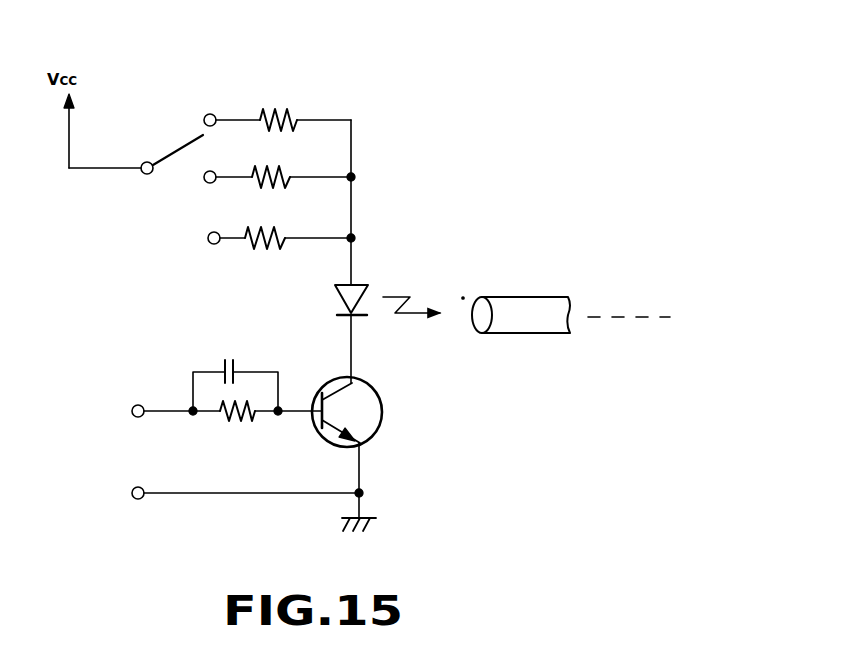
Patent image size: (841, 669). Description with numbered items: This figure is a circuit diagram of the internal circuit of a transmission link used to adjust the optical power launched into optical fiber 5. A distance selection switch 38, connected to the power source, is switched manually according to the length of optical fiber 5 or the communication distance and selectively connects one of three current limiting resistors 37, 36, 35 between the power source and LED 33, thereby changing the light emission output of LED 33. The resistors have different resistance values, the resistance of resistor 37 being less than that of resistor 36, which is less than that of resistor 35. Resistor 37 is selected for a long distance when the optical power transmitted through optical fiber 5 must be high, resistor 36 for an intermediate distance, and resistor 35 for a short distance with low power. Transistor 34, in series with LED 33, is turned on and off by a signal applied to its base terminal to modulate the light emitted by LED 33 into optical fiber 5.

The distance selection switch 38 is at (172, 127).
The current limiting resistor 37 is at (302, 110).
The current limiting resistor 36 is at (302, 165).
The current limiting resistor 35 is at (290, 225).
The LED 33 is at (360, 278).
The transistor 34 is at (387, 412).
The optical fiber 5 is at (533, 308).